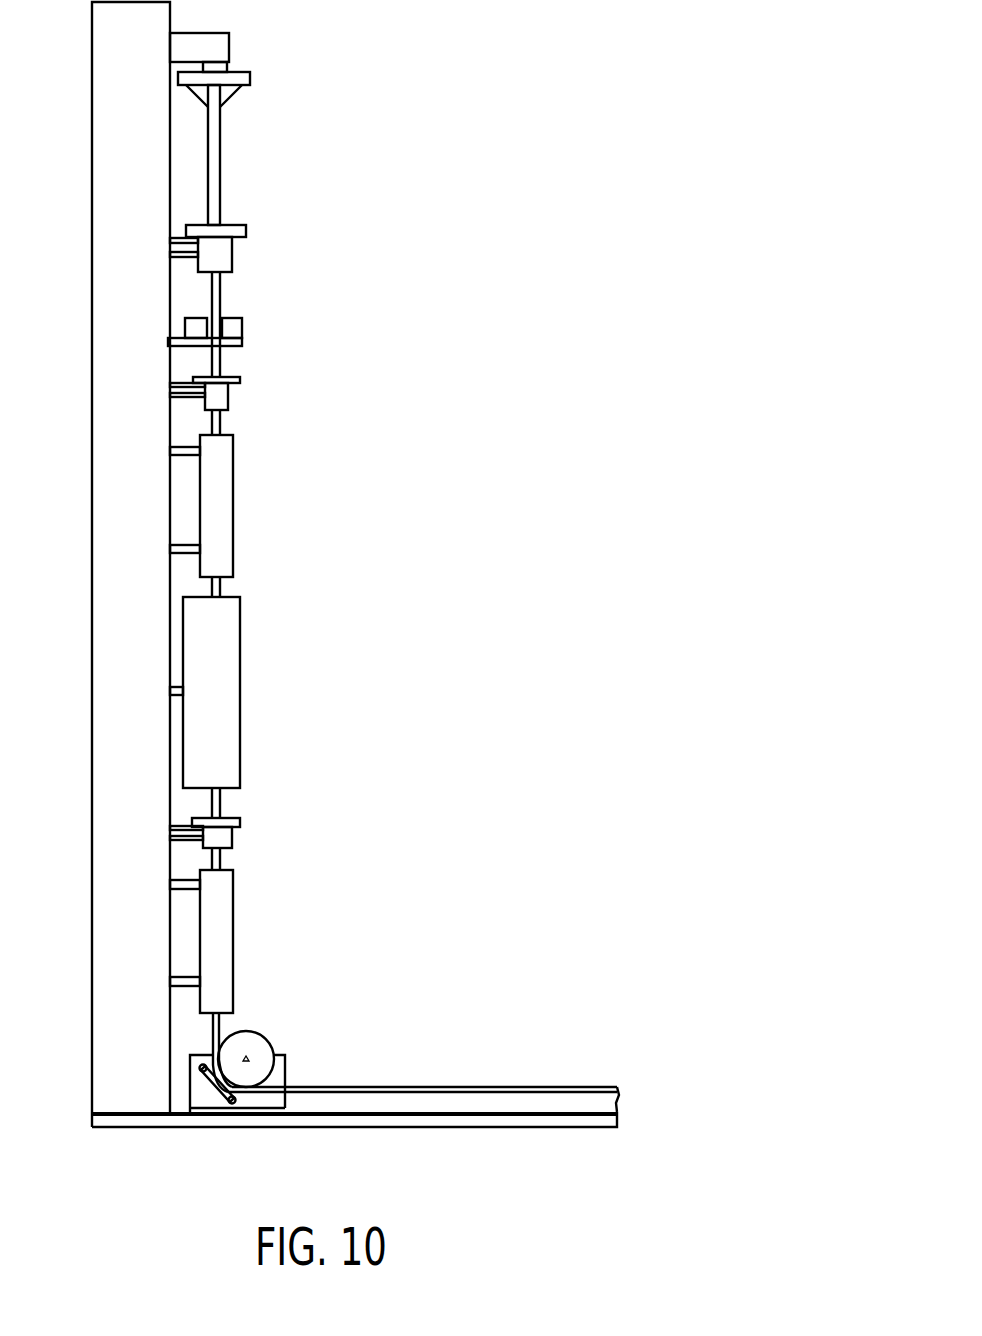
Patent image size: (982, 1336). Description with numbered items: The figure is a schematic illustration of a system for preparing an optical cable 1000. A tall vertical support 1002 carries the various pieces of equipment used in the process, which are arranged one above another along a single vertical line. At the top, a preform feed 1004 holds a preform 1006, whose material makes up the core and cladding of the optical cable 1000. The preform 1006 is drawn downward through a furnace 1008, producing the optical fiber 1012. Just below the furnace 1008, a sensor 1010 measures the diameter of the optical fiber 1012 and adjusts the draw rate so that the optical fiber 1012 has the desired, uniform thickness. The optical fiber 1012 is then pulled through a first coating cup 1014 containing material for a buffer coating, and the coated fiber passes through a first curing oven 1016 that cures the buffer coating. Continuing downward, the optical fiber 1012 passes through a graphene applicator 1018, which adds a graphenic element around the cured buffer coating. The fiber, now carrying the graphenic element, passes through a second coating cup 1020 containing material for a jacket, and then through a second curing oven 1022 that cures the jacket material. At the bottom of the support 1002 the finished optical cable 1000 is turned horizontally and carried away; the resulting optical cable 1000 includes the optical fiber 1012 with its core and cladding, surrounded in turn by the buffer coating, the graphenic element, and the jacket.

The optical cable 1000 is at (462, 1087).
The support 1002 is at (103, 97).
The preform feed 1004 is at (245, 75).
The preform 1006 is at (216, 152).
The furnace 1008 is at (222, 250).
The sensor 1010 is at (233, 328).
The optical fiber 1012 is at (219, 357).
The first coating cup 1014 is at (228, 395).
The first curing oven 1016 is at (224, 504).
The graphene applicator 1018 is at (232, 674).
The second coating cup 1020 is at (220, 836).
The second curing oven 1022 is at (228, 930).